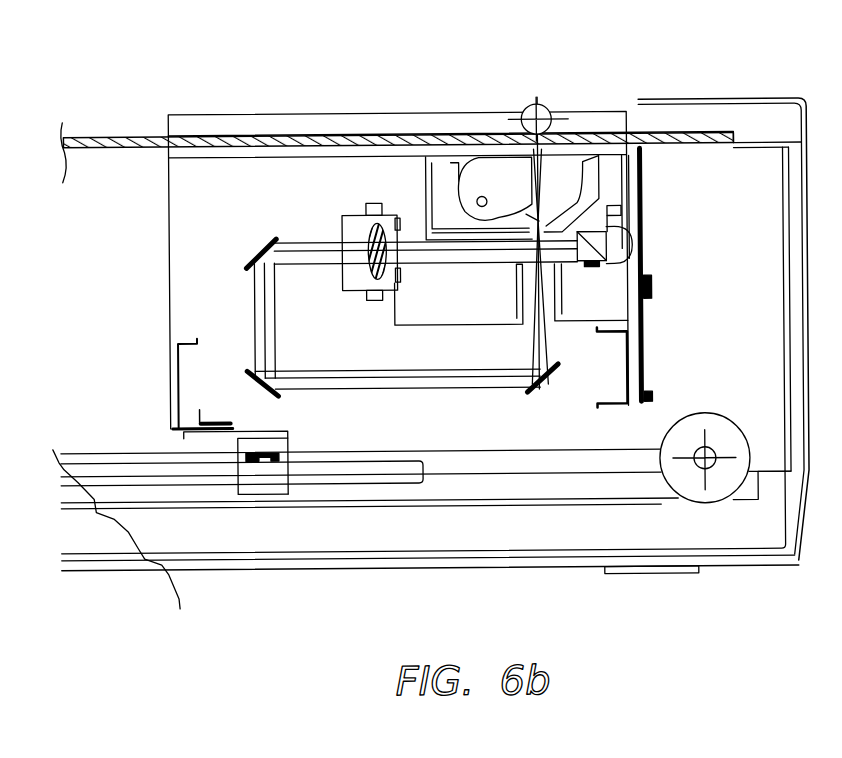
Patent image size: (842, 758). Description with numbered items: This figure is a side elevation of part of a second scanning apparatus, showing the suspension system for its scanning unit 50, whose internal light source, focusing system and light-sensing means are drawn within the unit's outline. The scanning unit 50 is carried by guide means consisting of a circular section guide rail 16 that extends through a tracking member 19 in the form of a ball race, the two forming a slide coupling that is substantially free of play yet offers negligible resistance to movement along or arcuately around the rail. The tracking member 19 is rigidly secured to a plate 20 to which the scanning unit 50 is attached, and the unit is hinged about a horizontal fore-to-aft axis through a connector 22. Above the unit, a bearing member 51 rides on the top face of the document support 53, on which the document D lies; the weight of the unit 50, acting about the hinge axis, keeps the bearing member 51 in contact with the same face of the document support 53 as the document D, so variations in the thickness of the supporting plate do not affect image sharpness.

The document D is at (228, 135).
The document support 53 is at (330, 135).
The bearing member 51 is at (548, 112).
The scanning unit 50 is at (170, 240).
The connector 22 is at (178, 427).
The plate 20 is at (193, 437).
The tracking member 19 is at (260, 480).
The guide rail 16 is at (385, 480).